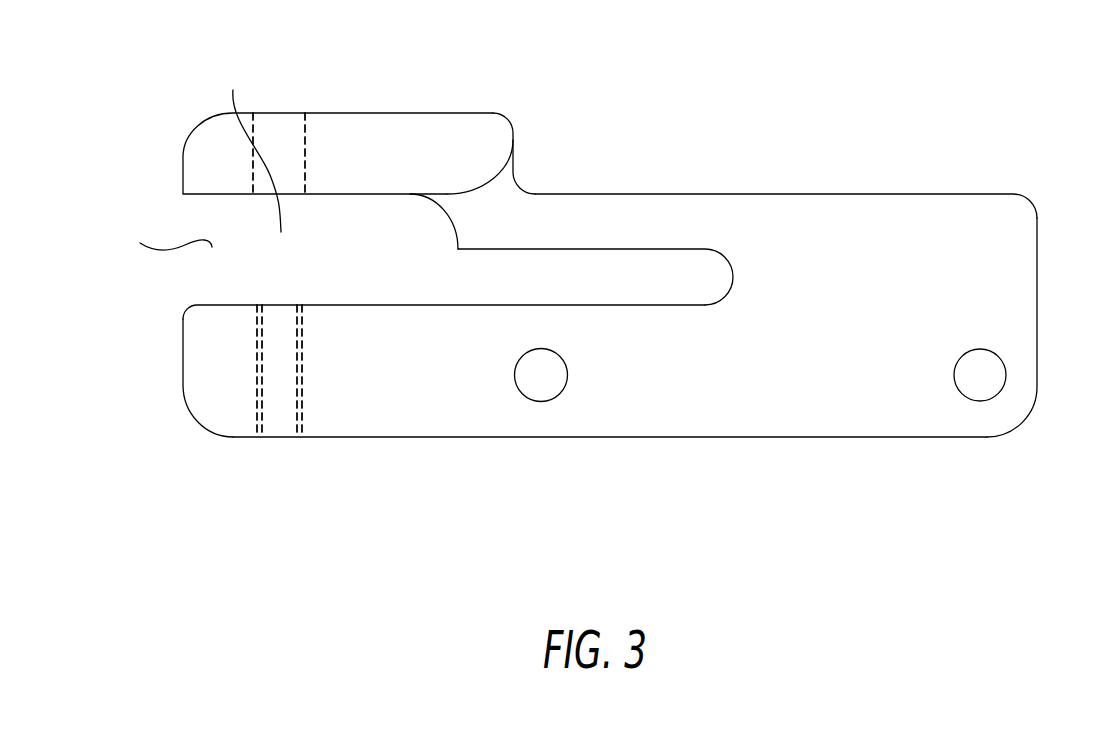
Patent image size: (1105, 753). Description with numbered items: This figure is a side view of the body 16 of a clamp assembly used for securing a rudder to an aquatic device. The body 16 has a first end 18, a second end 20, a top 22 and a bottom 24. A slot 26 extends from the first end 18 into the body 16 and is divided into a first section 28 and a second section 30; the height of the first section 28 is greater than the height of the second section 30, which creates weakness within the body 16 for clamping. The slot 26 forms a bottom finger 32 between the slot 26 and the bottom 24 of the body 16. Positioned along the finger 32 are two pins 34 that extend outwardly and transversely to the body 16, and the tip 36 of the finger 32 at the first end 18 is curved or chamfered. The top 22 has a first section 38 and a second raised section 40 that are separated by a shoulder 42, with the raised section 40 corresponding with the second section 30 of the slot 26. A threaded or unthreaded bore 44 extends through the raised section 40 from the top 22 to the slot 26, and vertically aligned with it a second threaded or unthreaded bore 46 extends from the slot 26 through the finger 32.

The body 16 is at (853, 161).
The first end 18 is at (183, 383).
The second end 20 is at (1037, 321).
The top 22 is at (562, 182).
The bottom 24 is at (729, 437).
The slot 26 is at (212, 247).
The first section 28 is at (281, 232).
The second section 30 is at (482, 280).
The bottom finger 32 is at (350, 407).
The pins 34 is at (538, 383).
The tip 36 is at (190, 307).
The first section 38 is at (928, 194).
The second raised section 40 is at (367, 113).
The shoulder 42 is at (513, 142).
The bore 44 is at (305, 157).
The second bore 46 is at (302, 362).